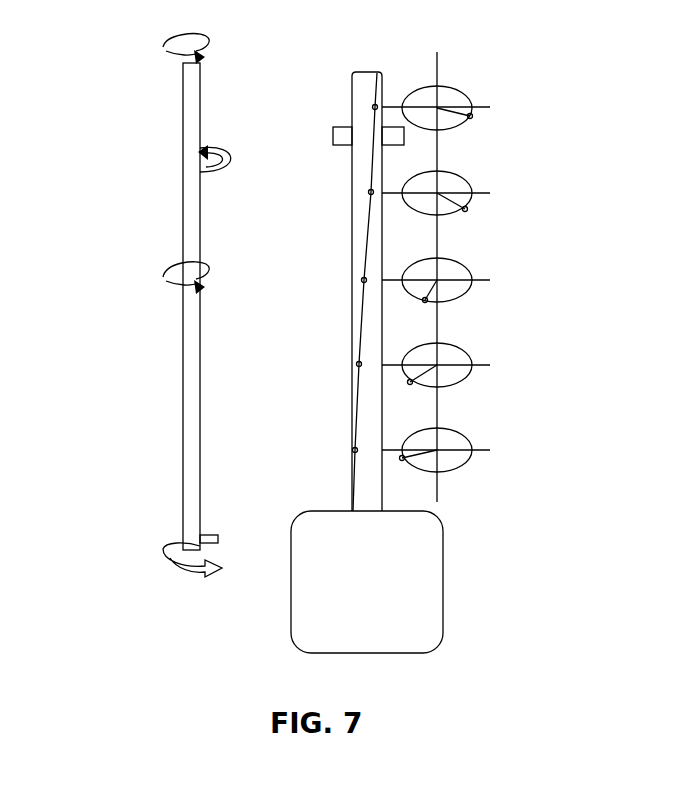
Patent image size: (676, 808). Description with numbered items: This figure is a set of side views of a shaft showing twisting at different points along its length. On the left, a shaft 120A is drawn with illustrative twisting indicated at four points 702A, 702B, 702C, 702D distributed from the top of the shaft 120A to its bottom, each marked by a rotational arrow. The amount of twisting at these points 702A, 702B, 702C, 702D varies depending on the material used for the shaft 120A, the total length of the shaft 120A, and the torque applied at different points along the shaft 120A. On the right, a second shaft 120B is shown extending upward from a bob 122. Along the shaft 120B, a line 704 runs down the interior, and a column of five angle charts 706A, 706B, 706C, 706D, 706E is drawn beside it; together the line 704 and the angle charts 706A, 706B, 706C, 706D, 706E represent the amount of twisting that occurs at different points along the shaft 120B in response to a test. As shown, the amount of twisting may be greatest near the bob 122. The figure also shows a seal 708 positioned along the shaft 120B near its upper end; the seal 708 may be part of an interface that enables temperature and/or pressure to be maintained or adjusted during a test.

The shaft 120A is at (183, 400).
The shaft 120B is at (352, 212).
The bob 122 is at (432, 513).
The point 702A is at (160, 45).
The point 702B is at (158, 163).
The point 702C is at (160, 276).
The point 702D is at (161, 546).
The line 704 is at (375, 92).
The angle chart 706A is at (455, 105).
The angle chart 706B is at (455, 190).
The angle chart 706C is at (455, 277).
The angle chart 706D is at (455, 362).
The angle chart 706E is at (455, 447).
The seal 708 is at (333, 137).